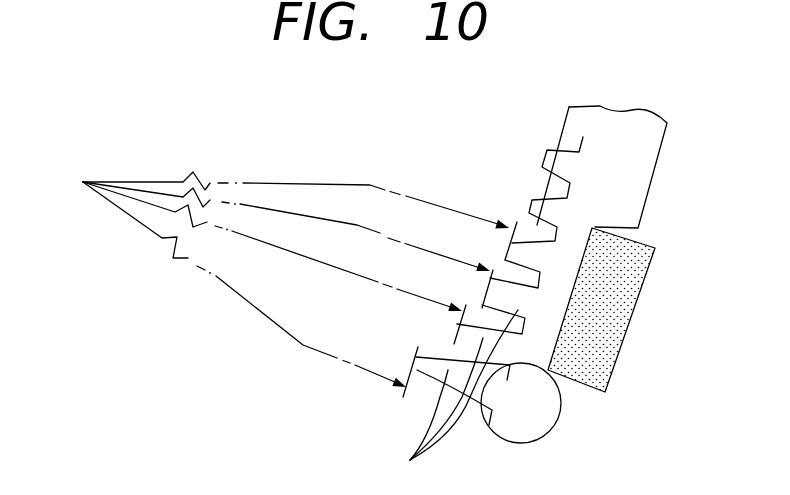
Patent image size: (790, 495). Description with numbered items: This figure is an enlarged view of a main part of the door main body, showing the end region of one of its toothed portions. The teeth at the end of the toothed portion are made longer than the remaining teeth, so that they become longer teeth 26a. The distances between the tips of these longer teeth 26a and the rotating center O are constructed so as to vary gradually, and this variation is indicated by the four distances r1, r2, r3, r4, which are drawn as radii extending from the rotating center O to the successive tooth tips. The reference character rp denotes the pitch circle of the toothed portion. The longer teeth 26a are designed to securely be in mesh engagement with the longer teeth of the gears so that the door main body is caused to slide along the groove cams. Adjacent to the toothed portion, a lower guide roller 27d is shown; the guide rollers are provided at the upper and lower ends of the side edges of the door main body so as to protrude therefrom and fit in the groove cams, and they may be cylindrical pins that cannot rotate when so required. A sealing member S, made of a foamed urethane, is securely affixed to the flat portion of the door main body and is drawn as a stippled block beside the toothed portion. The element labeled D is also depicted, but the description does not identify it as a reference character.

The rotating center O is at (71, 183).
The distance between tooth tip and rotating center r1 is at (296, 193).
The distance between tooth tip and rotating center r2 is at (286, 226).
The distance between tooth tip and rotating center r3 is at (272, 246).
The distance between tooth tip and rotating center r4 is at (244, 284).
The pitch circle rp is at (553, 124).
The damper D is at (662, 155).
The sealing member S is at (622, 320).
The longer teeth 26a is at (442, 394).
The lower guide rollers 27d is at (540, 420).